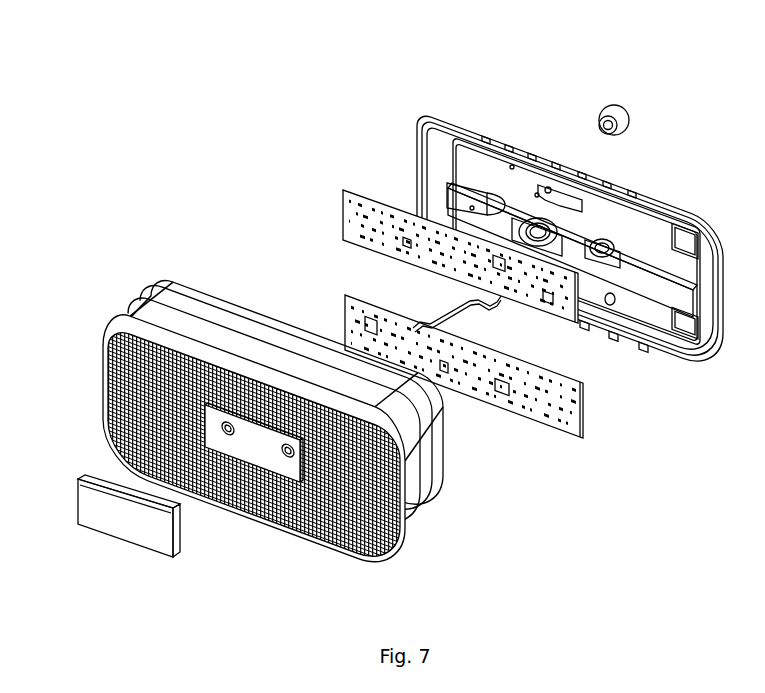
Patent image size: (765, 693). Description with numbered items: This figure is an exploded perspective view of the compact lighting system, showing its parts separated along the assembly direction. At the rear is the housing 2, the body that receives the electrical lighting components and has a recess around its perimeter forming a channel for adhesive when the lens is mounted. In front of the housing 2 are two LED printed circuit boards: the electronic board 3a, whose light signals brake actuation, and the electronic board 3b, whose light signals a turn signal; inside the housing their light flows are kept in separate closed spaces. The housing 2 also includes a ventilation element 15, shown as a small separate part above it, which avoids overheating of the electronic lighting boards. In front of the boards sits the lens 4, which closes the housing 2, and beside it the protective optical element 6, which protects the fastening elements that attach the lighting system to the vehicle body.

The housing 2 is at (693, 338).
The electronic board 3a is at (352, 217).
The electronic board 3b is at (555, 427).
The lens 4 is at (158, 333).
The protective optical element 6 is at (100, 497).
The ventilation element 15 is at (633, 106).